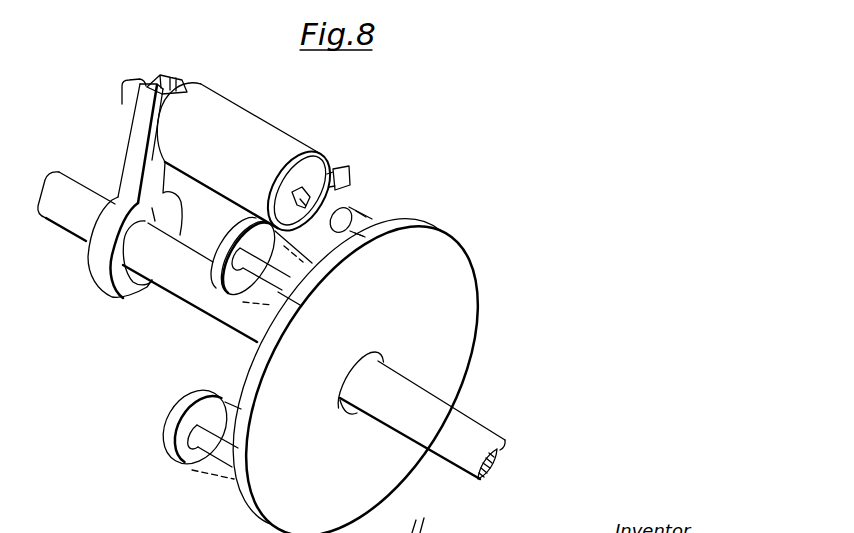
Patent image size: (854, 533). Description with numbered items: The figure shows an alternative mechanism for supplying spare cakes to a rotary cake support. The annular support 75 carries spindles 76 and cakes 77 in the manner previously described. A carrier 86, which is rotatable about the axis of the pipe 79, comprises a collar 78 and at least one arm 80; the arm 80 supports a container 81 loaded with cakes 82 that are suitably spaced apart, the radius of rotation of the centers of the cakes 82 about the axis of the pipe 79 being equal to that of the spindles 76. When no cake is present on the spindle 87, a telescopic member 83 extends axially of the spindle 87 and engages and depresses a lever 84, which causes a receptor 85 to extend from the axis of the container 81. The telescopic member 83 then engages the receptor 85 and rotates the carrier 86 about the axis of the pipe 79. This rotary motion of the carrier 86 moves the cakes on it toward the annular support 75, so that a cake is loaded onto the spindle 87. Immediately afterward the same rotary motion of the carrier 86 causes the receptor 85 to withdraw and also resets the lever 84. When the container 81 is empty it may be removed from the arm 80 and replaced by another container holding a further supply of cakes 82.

The annular support 75 is at (468, 328).
The spindles 76 is at (224, 448).
The cakes 77 is at (192, 458).
The collar 78 is at (93, 272).
The pipe 79 is at (478, 433).
The arm 80 is at (140, 130).
The container 81 is at (232, 105).
The cakes 82 is at (316, 162).
The telescopic member 83 is at (352, 210).
The lever 84 is at (351, 173).
The receptor 85 is at (295, 190).
The carrier 86 is at (116, 203).
The spindle 87 is at (360, 231).